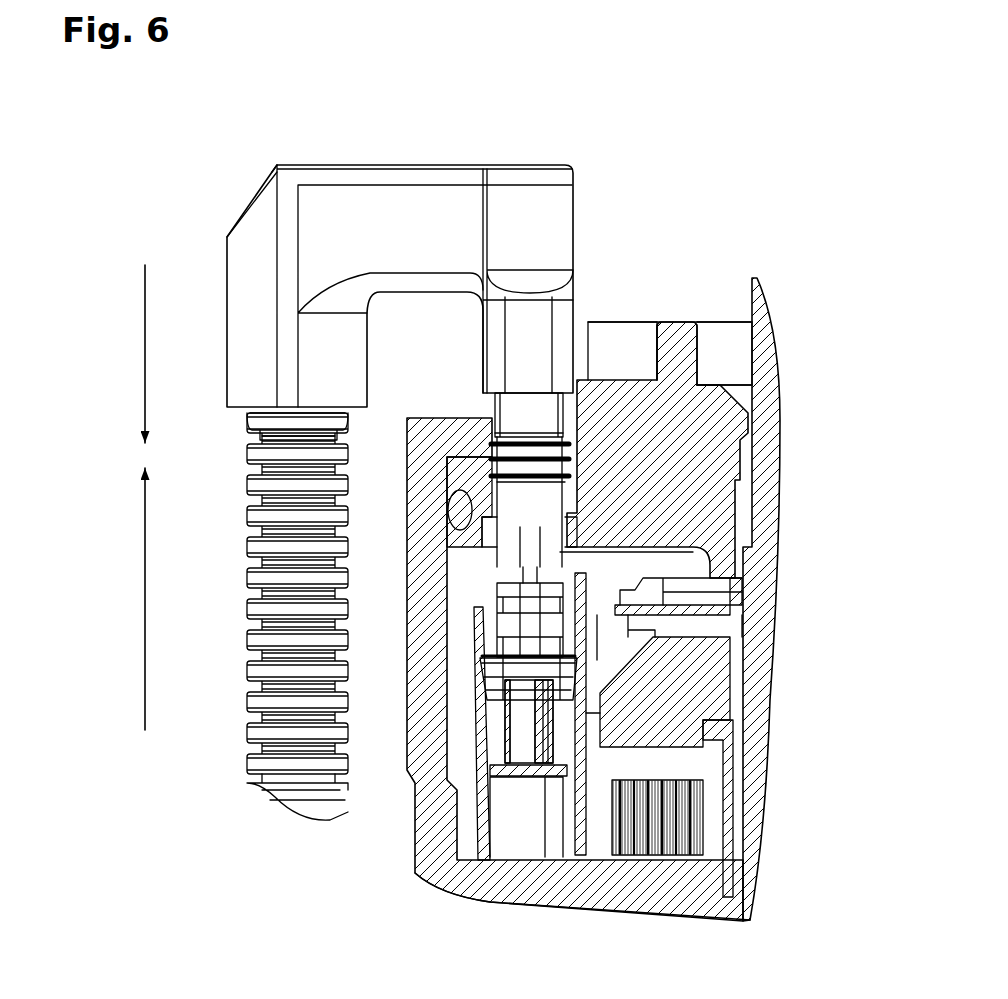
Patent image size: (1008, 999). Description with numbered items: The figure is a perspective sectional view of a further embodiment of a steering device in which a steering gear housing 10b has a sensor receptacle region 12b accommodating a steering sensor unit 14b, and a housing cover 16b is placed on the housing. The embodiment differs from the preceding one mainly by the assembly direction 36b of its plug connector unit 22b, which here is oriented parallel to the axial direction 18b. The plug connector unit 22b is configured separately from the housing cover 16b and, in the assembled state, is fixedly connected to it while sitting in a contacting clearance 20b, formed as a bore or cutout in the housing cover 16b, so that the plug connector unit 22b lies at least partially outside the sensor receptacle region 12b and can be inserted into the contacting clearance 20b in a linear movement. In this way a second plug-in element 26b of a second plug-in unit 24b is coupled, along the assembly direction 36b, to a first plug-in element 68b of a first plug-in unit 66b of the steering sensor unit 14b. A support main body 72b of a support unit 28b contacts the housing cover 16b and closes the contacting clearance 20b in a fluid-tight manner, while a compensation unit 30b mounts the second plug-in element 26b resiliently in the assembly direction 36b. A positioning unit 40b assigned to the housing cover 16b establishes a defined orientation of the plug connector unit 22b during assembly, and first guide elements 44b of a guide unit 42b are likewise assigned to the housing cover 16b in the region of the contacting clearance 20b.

The steering gear housing 10b is at (400, 869).
The sensor receptacle region 12b is at (456, 776).
The steering sensor unit 14b is at (495, 876).
The housing cover 16b is at (677, 305).
The axial direction 18b is at (145, 552).
The contacting clearance 20b is at (482, 408).
The plug connector unit 22b is at (634, 183).
The second plug-in unit 24b is at (475, 677).
The second plug-in element 26b is at (518, 735).
The support unit 28b is at (574, 140).
The compensation unit 30b is at (482, 582).
The assembly direction 36b is at (145, 349).
The positioning unit 40b is at (596, 304).
The guide unit 42b is at (589, 362).
The first guide elements 44b is at (588, 410).
The first plug-in unit 66b is at (532, 792).
The first plug-in element 68b is at (560, 754).
The support main body 72b is at (515, 180).